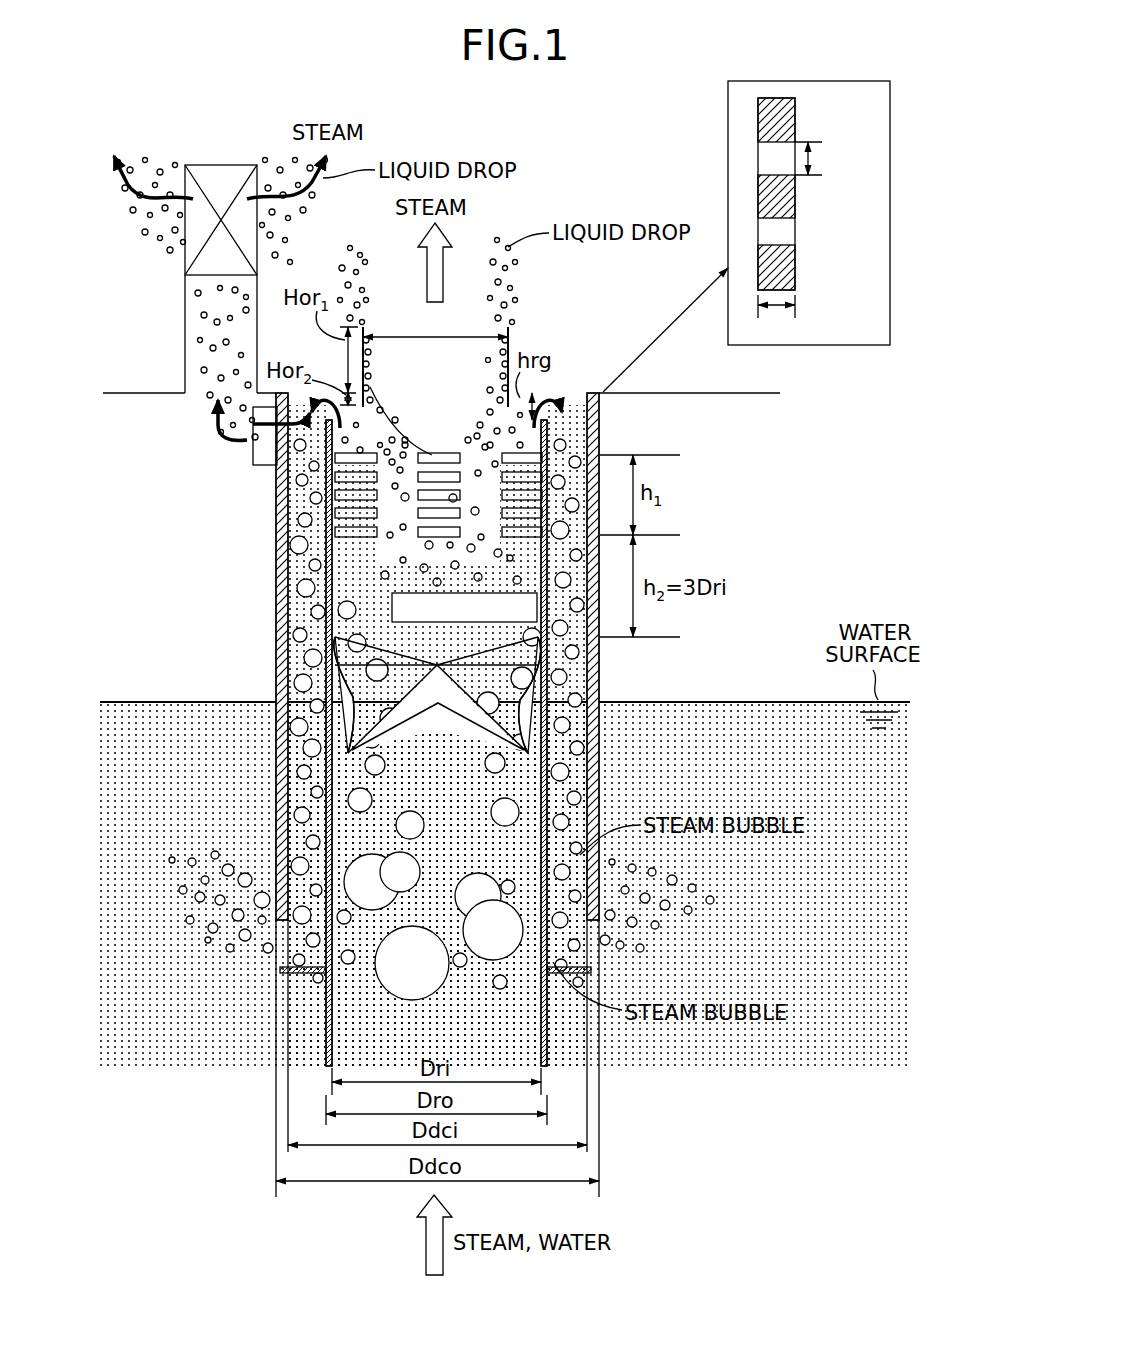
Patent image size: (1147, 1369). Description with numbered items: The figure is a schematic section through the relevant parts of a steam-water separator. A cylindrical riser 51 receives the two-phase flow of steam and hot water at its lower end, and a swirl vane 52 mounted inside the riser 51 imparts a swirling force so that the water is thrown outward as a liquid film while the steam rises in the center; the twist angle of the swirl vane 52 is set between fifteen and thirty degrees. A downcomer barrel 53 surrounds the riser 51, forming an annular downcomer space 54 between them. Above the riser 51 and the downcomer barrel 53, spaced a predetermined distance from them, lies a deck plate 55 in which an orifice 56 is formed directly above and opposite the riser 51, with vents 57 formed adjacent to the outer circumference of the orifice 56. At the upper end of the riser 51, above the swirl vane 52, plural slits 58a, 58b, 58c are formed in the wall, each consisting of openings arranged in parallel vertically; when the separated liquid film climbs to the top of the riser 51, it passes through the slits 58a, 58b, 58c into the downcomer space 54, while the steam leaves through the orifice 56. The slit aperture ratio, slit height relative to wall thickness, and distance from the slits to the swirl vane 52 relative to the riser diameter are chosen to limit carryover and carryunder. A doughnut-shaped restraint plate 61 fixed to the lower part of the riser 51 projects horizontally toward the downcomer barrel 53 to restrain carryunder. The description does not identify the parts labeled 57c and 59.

The riser 51 is at (548, 815).
The swirl vane 52 is at (548, 698).
The downcomer barrel 53 is at (600, 773).
The downcomer space 54 is at (300, 587).
The deck plate 55 is at (668, 392).
The orifice 56 is at (512, 354).
The vent 57 is at (221, 172).
The liquid return flow 57c is at (548, 450).
The slit 58a is at (333, 492).
The slit 58b is at (368, 380).
The slit 58c is at (545, 495).
The drain duct 59 is at (253, 461).
The restraint plate 61 is at (300, 975).